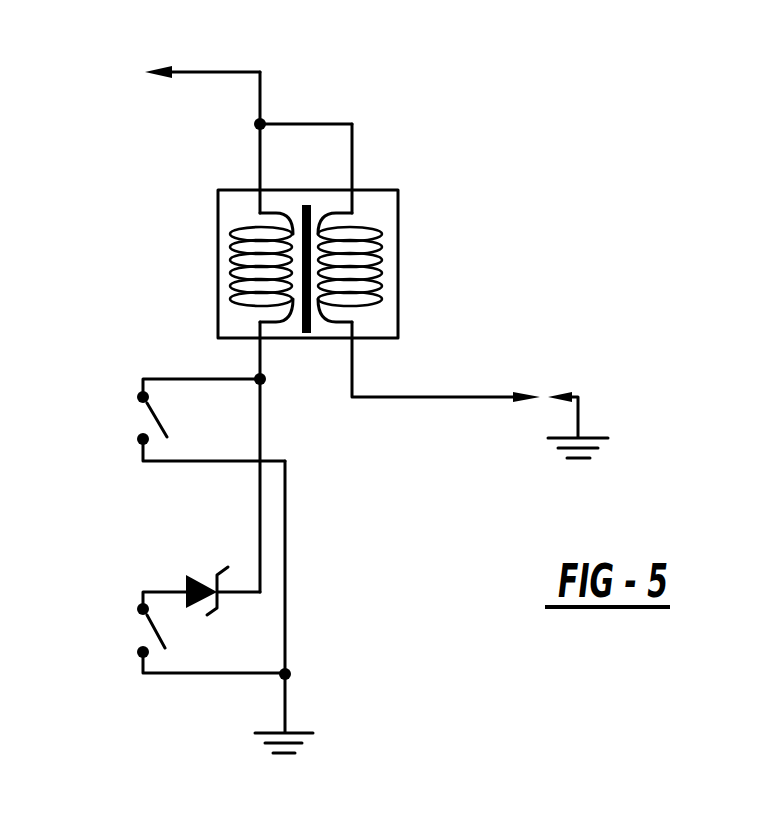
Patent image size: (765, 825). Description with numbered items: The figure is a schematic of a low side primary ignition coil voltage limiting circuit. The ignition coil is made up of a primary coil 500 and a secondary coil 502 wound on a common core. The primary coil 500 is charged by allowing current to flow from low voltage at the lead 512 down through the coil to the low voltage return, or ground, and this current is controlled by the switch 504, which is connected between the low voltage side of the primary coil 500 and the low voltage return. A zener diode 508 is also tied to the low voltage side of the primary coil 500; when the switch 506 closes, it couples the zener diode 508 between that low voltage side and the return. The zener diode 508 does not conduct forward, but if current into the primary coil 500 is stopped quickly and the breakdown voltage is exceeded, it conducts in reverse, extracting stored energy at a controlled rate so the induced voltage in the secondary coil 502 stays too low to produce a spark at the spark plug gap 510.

The primary coil 500 is at (255, 230).
The secondary coil 502 is at (372, 317).
The switch 504 is at (142, 416).
The switch 506 is at (142, 630).
The zener diode 508 is at (197, 575).
The spark plug gap 510 is at (540, 410).
The lead 512 is at (179, 74).